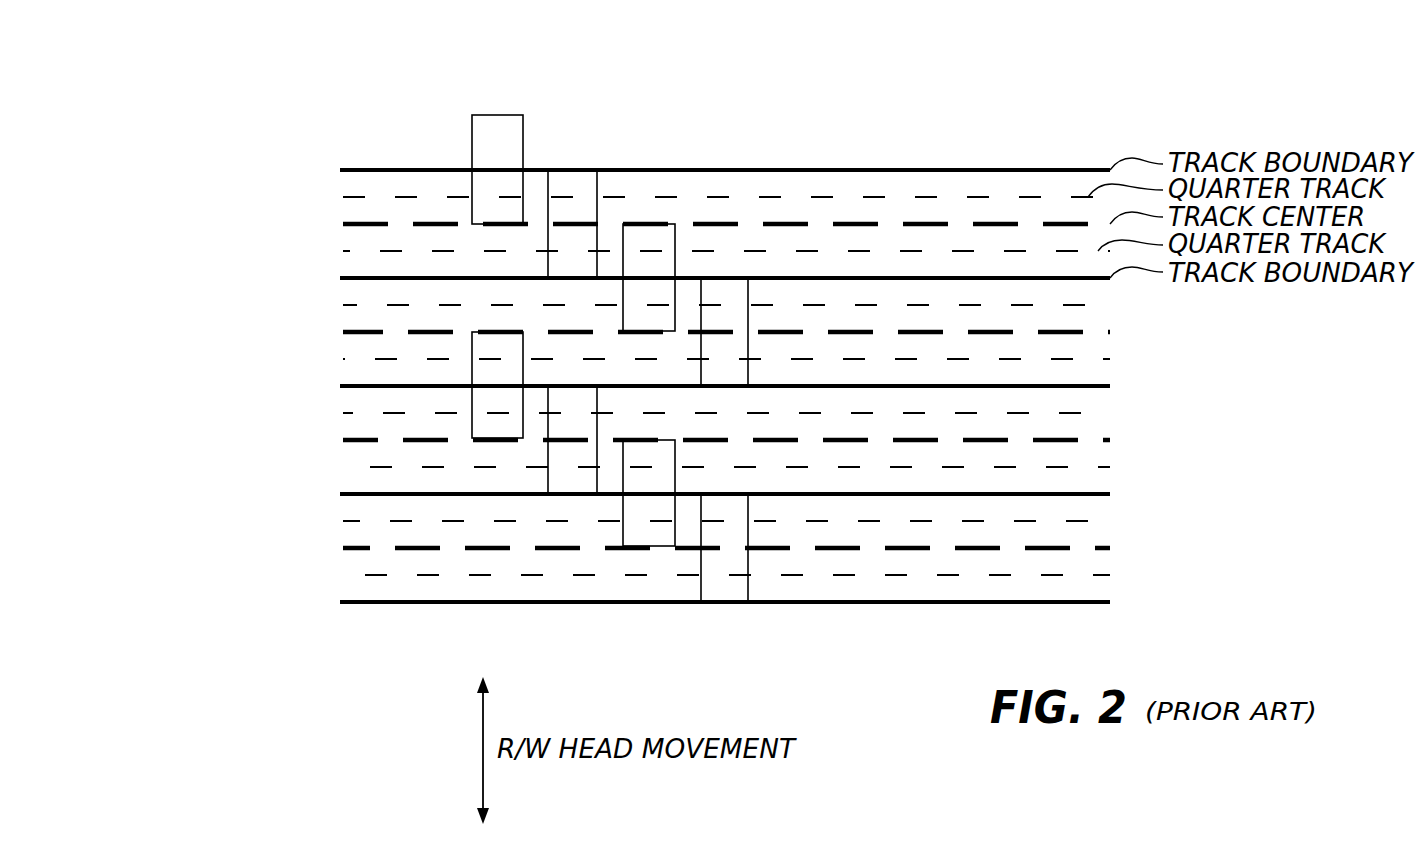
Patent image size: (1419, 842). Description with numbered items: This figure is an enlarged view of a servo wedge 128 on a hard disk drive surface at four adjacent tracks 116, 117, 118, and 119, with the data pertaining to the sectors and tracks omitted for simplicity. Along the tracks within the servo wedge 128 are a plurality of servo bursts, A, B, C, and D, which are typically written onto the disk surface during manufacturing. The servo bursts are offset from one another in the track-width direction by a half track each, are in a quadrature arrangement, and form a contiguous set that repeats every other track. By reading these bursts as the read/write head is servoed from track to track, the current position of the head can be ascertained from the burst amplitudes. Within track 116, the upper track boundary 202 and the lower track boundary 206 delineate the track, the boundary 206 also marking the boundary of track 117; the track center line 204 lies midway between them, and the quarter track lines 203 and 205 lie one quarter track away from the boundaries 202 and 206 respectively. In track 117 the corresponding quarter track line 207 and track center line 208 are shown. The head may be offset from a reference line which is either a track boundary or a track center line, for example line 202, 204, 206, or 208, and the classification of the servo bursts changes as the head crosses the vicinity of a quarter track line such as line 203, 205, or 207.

The servo wedge 128 is at (720, 92).
The track 116 is at (619, 201).
The track 117 is at (615, 337).
The track 118 is at (617, 453).
The track 119 is at (620, 561).
The track boundary 202 is at (390, 170).
The quarter track line 203 is at (350, 196).
The track center line 204 is at (350, 223).
The quarter track line 205 is at (350, 250).
The track boundary 206 is at (350, 278).
The quarter track line 207 is at (350, 304).
The track center line 208 is at (350, 332).